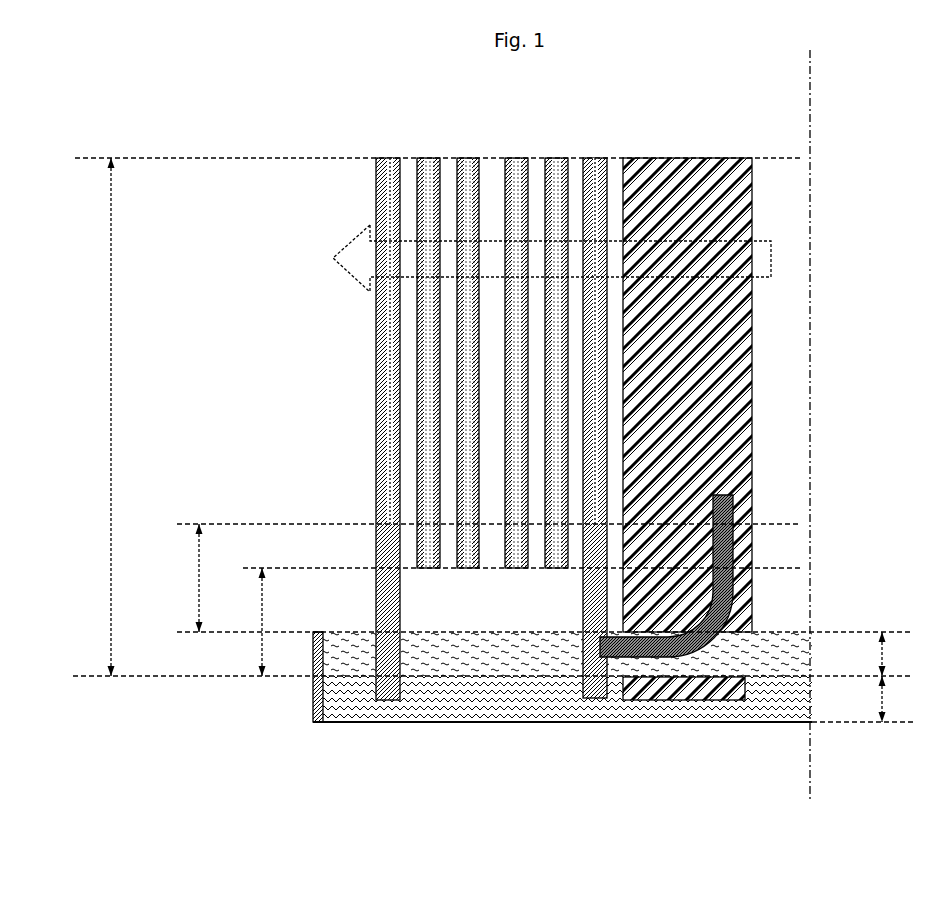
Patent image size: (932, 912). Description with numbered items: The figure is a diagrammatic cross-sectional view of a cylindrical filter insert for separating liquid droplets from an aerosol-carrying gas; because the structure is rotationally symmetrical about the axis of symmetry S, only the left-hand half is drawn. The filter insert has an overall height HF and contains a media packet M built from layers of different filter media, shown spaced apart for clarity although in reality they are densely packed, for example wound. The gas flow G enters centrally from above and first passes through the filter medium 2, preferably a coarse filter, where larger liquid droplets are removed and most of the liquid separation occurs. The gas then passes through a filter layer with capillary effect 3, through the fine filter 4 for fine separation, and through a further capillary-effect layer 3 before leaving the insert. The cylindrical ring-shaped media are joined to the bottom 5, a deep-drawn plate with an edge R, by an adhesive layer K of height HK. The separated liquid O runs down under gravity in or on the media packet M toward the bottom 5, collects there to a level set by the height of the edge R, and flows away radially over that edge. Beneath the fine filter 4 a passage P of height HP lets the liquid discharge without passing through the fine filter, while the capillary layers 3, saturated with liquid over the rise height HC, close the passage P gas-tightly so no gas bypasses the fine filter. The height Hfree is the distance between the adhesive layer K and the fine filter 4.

The filter medium for liquid separation 2 is at (662, 158).
The filter layer with capillary effect 3 is at (385, 158).
The fine filter 4 is at (418, 153).
The bottom 5 is at (687, 723).
The gas flow G is at (562, 258).
The adhesive layer K is at (353, 723).
The media packet M is at (380, 103).
The liquid O is at (311, 662).
The passage P is at (520, 644).
The edge R is at (313, 700).
The axis of symmetry S is at (806, 415).
The height of the filter insert HF is at (95, 417).
The rise height of liquid due to capillary effect HC is at (182, 578).
The free height Hfree is at (241, 622).
The height of the passage HP is at (898, 654).
The height of the adhesive layer HK is at (899, 699).